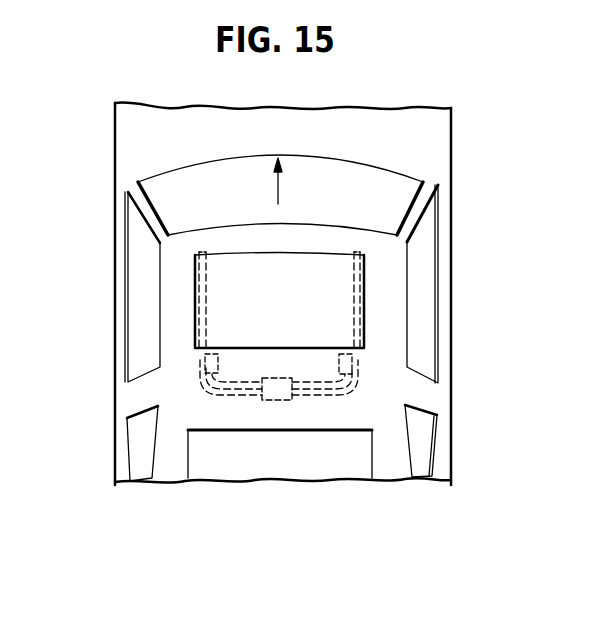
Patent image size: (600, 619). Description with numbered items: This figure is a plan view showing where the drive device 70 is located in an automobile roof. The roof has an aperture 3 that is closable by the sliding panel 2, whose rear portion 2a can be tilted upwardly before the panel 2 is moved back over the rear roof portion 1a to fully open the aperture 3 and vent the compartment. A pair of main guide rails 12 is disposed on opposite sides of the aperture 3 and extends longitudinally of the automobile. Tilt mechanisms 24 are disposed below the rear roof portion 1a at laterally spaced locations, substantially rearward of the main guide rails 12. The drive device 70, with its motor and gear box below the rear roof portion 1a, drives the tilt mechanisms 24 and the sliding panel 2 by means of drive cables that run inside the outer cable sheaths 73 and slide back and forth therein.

The rear roof portion 1a is at (297, 360).
The sliding panel 2 is at (316, 286).
The rear portion 2a is at (297, 330).
The aperture 3 is at (366, 282).
The main guide rail 12 is at (197, 302).
The tilt mechanism 24 is at (212, 358).
The drive device 70 is at (278, 401).
The outer cable sheath 73 is at (235, 381).